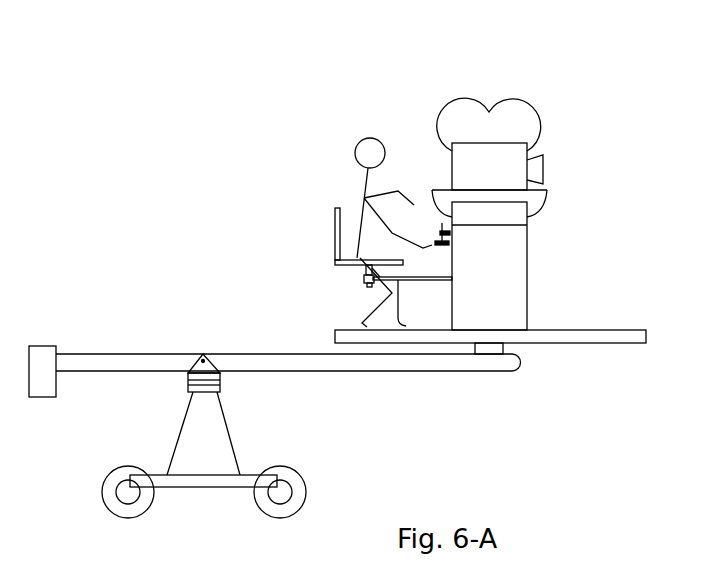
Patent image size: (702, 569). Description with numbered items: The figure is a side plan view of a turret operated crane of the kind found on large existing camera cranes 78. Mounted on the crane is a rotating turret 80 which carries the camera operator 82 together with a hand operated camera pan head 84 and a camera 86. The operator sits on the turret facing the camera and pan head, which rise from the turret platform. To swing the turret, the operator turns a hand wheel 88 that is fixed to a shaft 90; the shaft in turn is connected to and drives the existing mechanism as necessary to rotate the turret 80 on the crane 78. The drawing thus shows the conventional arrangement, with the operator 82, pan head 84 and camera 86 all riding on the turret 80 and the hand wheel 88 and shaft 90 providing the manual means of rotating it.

The camera crane 78 is at (158, 360).
The rotating turret 80 is at (503, 323).
The camera operator 82 is at (368, 147).
The hand operated camera pan head 84 is at (513, 217).
The camera 86 is at (522, 122).
The hand wheel 88 is at (446, 236).
The shaft 90 is at (447, 233).